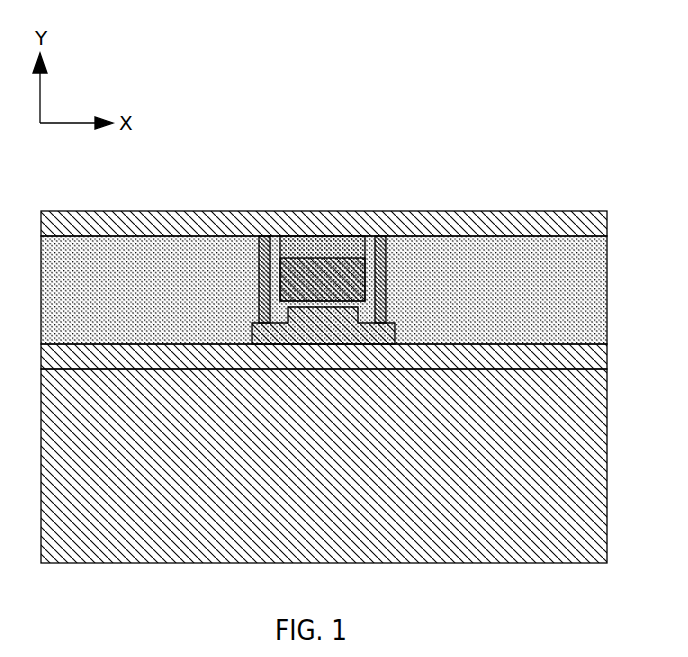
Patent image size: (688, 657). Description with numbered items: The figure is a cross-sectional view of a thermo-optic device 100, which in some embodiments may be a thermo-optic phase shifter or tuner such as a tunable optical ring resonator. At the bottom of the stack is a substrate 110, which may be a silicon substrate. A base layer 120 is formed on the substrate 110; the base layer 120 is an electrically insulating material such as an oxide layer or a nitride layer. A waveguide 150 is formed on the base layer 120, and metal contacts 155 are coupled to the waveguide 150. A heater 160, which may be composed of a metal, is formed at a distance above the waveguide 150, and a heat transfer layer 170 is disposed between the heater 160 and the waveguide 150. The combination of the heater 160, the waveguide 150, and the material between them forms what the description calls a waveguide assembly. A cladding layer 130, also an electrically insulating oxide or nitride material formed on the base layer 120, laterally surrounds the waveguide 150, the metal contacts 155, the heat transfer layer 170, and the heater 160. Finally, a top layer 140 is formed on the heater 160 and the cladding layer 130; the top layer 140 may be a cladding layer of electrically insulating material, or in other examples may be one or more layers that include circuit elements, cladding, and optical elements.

The thermo-optic device 100 is at (355, 325).
The substrate 110 is at (607, 465).
The base layer 120 is at (607, 355).
The cladding layer 130 is at (607, 293).
The top layer 140 is at (607, 223).
The waveguide 150 is at (254, 324).
The metal contacts 155 is at (264, 238).
The heater 160 is at (322, 237).
The heat transfer layer 170 is at (367, 288).